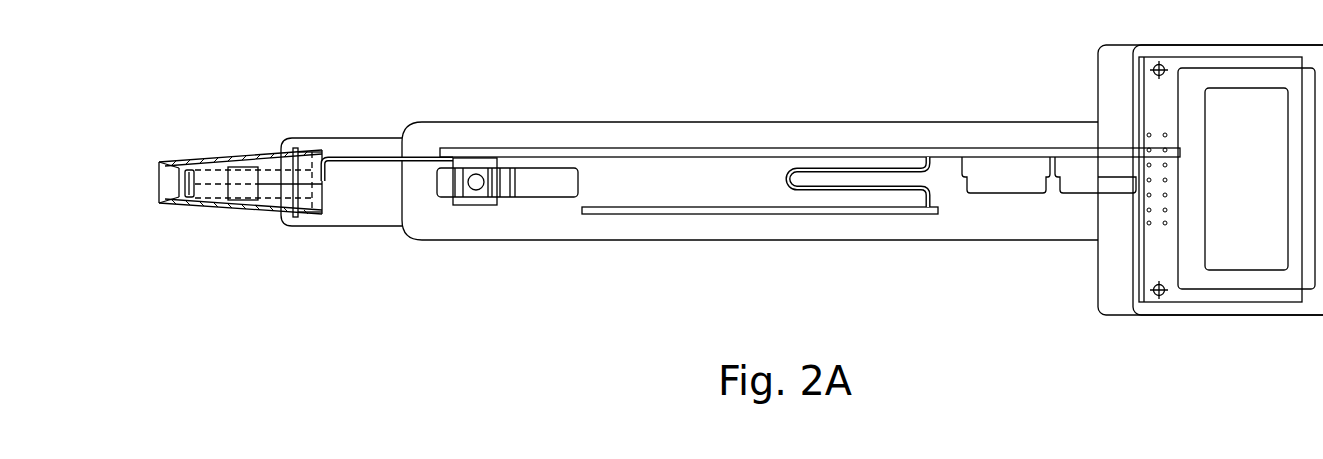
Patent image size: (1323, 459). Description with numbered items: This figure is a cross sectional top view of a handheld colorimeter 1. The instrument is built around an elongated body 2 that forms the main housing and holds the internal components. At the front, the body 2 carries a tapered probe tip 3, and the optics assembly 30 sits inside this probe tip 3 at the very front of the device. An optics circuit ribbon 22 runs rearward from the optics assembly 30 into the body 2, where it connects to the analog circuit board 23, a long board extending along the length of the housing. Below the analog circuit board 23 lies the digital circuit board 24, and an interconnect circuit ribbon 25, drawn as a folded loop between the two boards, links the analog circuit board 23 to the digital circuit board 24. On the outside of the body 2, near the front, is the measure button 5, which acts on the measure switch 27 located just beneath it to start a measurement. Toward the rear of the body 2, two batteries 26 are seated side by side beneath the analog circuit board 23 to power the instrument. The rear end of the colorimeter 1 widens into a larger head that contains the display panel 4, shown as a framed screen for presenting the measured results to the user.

The colorimeter 1 is at (737, 100).
The body 2 is at (587, 227).
The probe tip 3 is at (232, 213).
The display panel 4 is at (1247, 252).
The measure button 5 is at (540, 185).
The optics circuit ribbon 22 is at (380, 162).
The analog circuit board 23 is at (557, 155).
The digital circuit board 24 is at (700, 212).
The interconnect circuit ribbon 25 is at (850, 190).
The batteries 26 is at (1008, 172).
The measure switch 27 is at (472, 198).
The optics assembly 30 is at (168, 183).